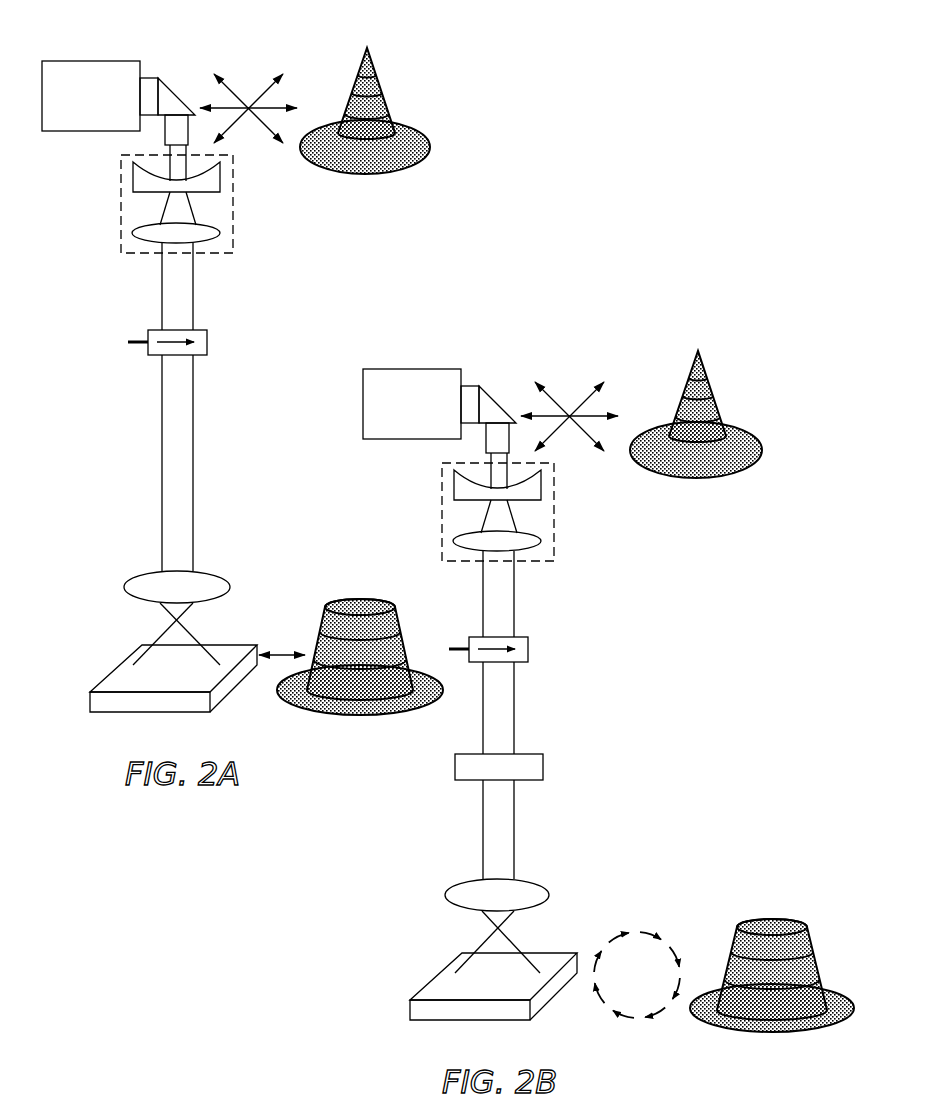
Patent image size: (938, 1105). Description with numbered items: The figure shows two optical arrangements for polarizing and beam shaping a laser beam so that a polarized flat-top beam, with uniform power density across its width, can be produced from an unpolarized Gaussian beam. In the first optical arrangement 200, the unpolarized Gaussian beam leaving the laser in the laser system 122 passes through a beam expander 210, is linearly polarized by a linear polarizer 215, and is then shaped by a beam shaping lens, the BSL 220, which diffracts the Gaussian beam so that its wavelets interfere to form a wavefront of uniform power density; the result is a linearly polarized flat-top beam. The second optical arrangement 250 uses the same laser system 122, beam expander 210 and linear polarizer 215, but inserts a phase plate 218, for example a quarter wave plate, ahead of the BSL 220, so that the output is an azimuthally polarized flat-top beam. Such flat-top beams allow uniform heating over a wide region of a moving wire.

In FIG. 2A, the first optical arrangement 200 is at (243, 42).
In FIG. 2B, the second optical arrangement 250 is at (564, 351).
In FIG. 2A, the laser system 122 is at (78, 116).
In FIG. 2B, the laser system 122 is at (439, 429).
In FIG. 2A, the beam expander 210 is at (233, 239).
In FIG. 2B, the beam expander 210 is at (539, 512).
In FIG. 2A, the linear polarizer 215 is at (203, 355).
In FIG. 2B, the linear polarizer 215 is at (524, 662).
In FIG. 2B, the phase plate 218 is at (455, 763).
In FIG. 2A, the beam shaping lens (BSL) 220 is at (213, 572).
In FIG. 2B, the beam shaping lens (BSL) 220 is at (533, 880).